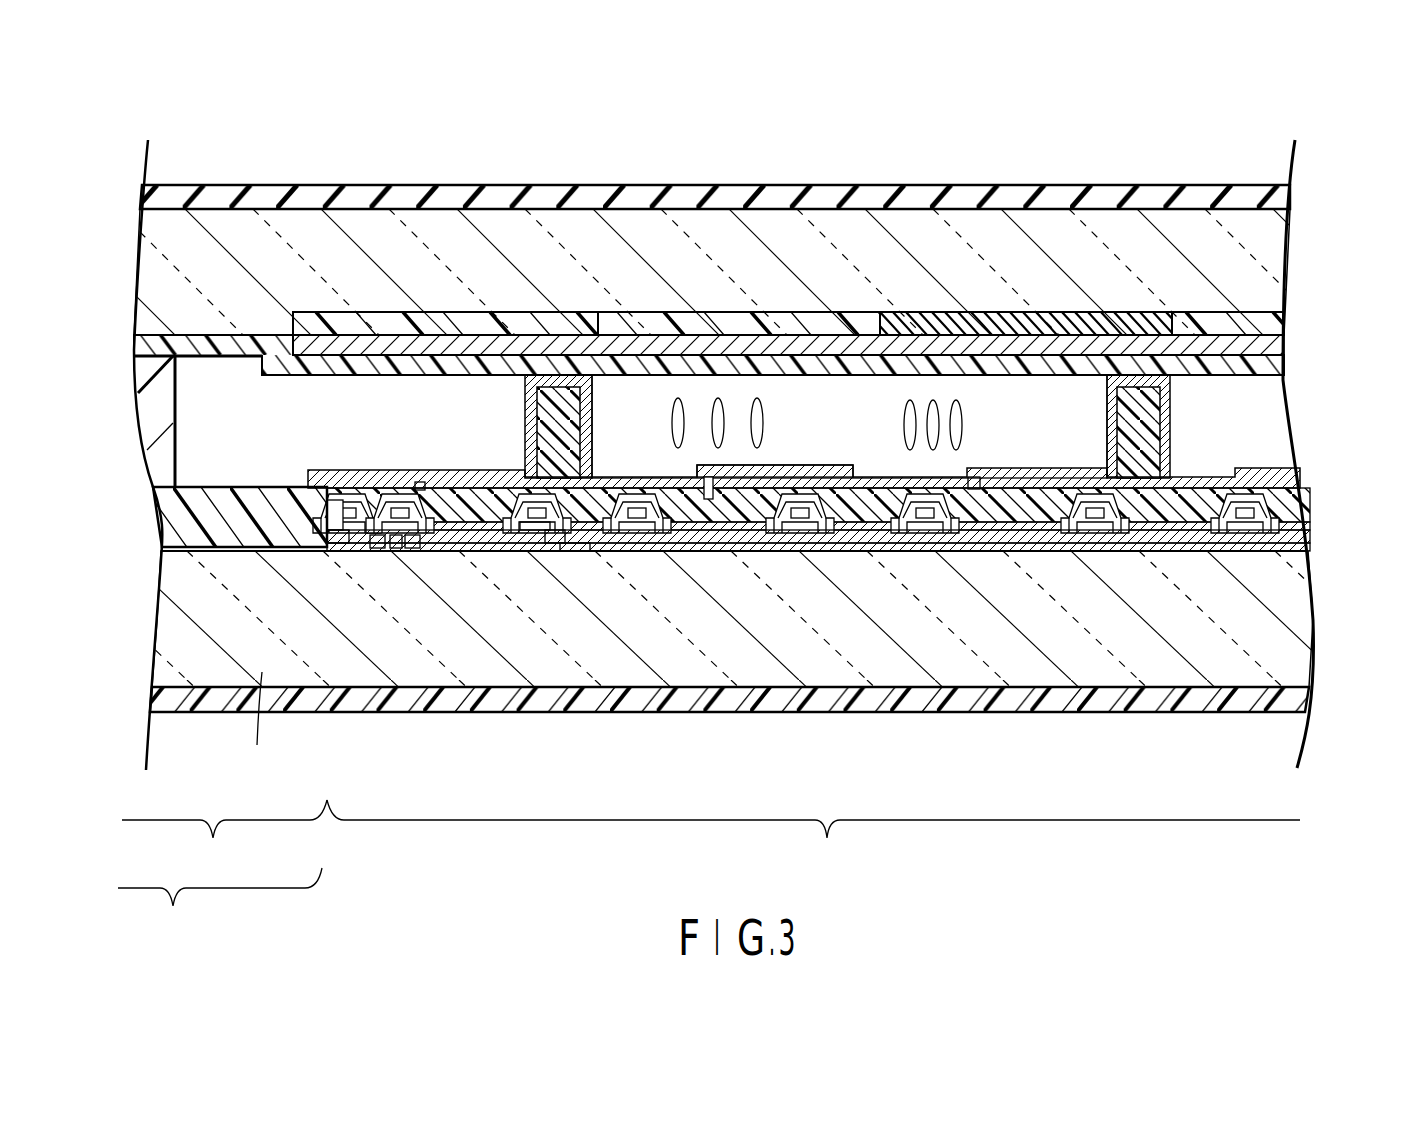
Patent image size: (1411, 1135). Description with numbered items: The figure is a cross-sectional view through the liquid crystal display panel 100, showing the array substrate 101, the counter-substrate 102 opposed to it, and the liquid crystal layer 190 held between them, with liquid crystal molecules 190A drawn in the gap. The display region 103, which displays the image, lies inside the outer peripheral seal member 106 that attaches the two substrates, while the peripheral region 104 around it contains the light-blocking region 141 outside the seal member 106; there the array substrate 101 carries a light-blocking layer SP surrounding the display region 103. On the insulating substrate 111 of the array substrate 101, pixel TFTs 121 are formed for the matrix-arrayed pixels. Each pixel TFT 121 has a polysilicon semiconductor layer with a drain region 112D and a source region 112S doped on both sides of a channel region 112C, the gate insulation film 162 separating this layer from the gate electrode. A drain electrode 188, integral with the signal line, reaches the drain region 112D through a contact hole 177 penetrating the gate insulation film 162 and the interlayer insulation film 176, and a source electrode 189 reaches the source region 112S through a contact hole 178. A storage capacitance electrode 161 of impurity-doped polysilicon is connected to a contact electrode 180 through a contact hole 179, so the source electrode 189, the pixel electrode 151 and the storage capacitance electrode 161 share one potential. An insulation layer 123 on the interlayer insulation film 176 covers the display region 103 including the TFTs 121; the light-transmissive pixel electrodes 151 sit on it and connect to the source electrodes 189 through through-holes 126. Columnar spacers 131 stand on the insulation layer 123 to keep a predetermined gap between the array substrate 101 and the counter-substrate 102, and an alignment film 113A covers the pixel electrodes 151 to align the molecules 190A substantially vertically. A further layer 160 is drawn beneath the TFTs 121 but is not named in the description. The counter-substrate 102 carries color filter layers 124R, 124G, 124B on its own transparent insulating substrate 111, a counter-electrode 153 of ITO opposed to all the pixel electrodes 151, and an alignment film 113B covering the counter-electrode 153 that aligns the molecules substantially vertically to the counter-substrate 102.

The liquid crystal display panel 100 is at (1228, 117).
The array substrate 101 is at (188, 726).
The counter-substrate 102 is at (100, 131).
The display region 103 is at (813, 836).
The peripheral region 104 is at (220, 904).
The outer peripheral seal member 106 is at (140, 403).
The insulating substrate 111 is at (255, 721).
The drain region 112D is at (380, 550).
The channel region 112C is at (396, 550).
The source region 112S is at (412, 552).
The alignment film 113A is at (870, 475).
The alignment film 113B is at (1268, 365).
The pixel TFT 121 is at (380, 555).
The insulation layer 123 is at (778, 534).
The color filter layer (R) 124R is at (445, 322).
The color filter layer (G) 124G is at (730, 322).
The color filter layer (B) 124B is at (1048, 322).
The through-hole 126 is at (420, 488).
The columnar spacer 131 is at (567, 395).
The light-blocking region 141 is at (224, 836).
The pixel electrode 151 is at (475, 478).
The counter-electrode 153 is at (1268, 347).
The light shielding film 160 is at (1310, 548).
The storage capacitance electrode 161 is at (568, 552).
The gate insulation film 162 is at (1310, 535).
The interlayer insulation film 176 is at (327, 520).
The contact hole 177 is at (345, 532).
The contact hole 178 is at (528, 534).
The contact hole 179 is at (548, 545).
The contact electrode 180 is at (515, 482).
The drain electrode 188 is at (350, 495).
The source electrode 189 is at (392, 495).
The liquid crystal layer 190 is at (1270, 420).
The liquid crystal molecules 190A is at (762, 398).
The light-blocking layer SP is at (182, 522).